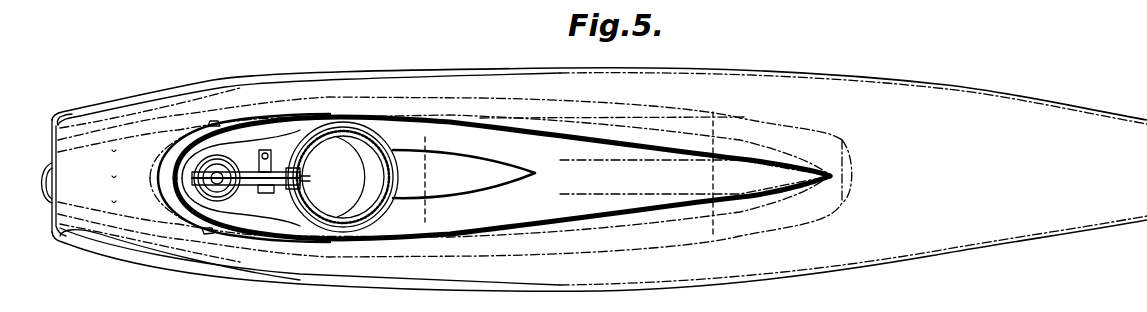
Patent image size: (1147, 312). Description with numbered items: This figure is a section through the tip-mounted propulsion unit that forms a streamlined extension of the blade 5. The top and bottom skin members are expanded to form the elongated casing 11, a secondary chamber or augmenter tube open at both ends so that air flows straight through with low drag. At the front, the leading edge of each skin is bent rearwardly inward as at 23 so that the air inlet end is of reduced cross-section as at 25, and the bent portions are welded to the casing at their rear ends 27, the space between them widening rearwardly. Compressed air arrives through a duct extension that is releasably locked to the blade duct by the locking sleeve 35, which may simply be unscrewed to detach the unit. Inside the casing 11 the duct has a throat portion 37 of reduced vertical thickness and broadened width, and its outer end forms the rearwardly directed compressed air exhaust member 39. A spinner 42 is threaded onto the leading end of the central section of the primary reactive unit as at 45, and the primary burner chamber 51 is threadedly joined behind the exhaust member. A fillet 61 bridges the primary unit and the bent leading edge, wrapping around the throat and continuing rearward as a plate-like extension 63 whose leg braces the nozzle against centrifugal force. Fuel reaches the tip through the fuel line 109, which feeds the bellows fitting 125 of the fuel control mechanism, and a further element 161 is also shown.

The blade 5 is at (684, 210).
The casing 11 is at (838, 22).
The rearwardly bent leading edge 23 is at (60, 118).
The reduced cross-section air inlet end 25 is at (83, 135).
The rear ends of rearwardly bent portions 27 is at (258, 277).
The locking sleeve 35 is at (397, 164).
The throat portion 37 is at (358, 168).
The compressed air exhaust member 39 is at (425, 123).
The spinner 42 is at (148, 122).
The threaded attachment 45 is at (215, 122).
The primary burner chamber 51 is at (545, 118).
The fillet 61 is at (481, 136).
The plate-like rearward extension 63 is at (595, 158).
The fuel line 109 is at (228, 165).
The bellows fitting 125 is at (257, 125).
The pulley 161 is at (250, 191).